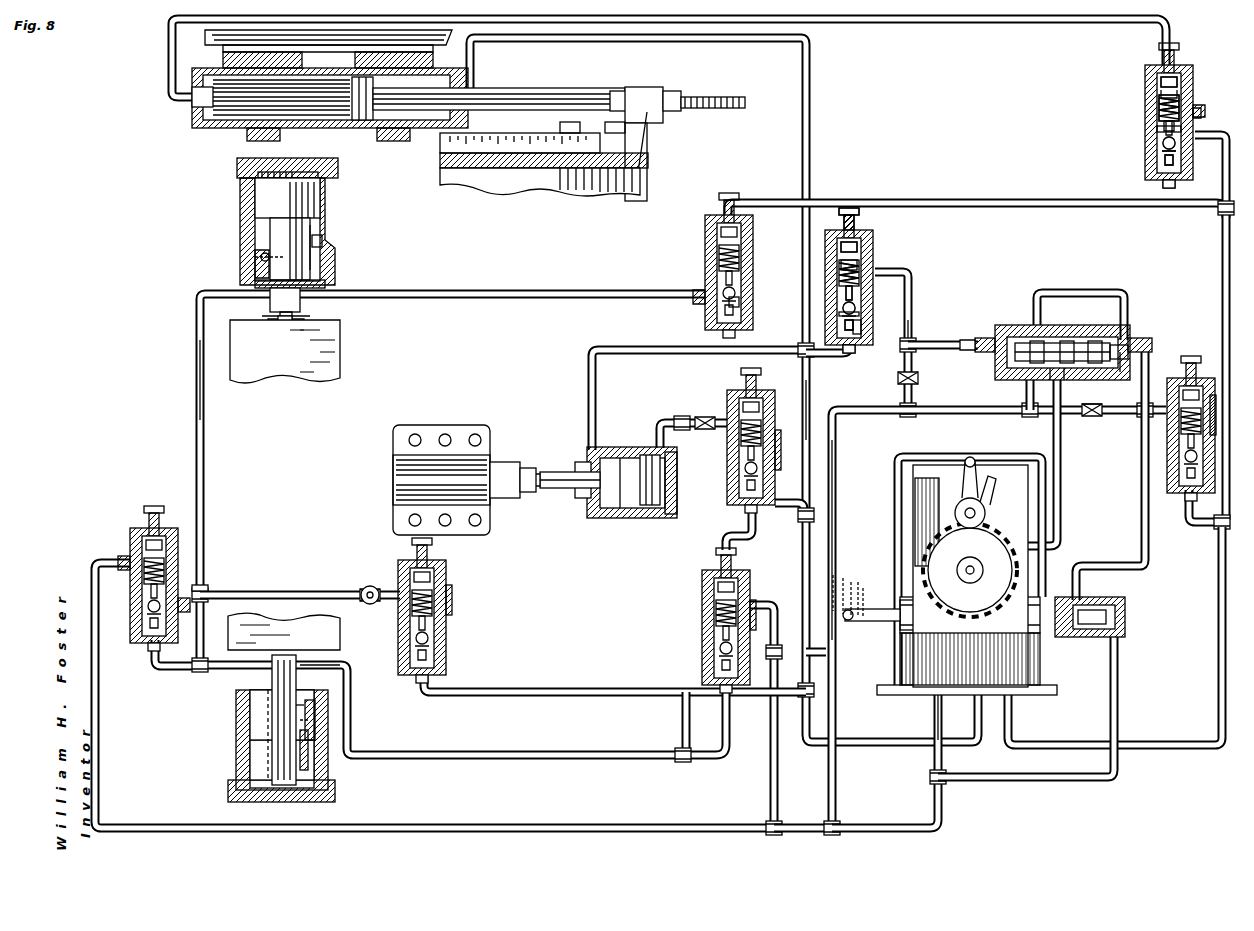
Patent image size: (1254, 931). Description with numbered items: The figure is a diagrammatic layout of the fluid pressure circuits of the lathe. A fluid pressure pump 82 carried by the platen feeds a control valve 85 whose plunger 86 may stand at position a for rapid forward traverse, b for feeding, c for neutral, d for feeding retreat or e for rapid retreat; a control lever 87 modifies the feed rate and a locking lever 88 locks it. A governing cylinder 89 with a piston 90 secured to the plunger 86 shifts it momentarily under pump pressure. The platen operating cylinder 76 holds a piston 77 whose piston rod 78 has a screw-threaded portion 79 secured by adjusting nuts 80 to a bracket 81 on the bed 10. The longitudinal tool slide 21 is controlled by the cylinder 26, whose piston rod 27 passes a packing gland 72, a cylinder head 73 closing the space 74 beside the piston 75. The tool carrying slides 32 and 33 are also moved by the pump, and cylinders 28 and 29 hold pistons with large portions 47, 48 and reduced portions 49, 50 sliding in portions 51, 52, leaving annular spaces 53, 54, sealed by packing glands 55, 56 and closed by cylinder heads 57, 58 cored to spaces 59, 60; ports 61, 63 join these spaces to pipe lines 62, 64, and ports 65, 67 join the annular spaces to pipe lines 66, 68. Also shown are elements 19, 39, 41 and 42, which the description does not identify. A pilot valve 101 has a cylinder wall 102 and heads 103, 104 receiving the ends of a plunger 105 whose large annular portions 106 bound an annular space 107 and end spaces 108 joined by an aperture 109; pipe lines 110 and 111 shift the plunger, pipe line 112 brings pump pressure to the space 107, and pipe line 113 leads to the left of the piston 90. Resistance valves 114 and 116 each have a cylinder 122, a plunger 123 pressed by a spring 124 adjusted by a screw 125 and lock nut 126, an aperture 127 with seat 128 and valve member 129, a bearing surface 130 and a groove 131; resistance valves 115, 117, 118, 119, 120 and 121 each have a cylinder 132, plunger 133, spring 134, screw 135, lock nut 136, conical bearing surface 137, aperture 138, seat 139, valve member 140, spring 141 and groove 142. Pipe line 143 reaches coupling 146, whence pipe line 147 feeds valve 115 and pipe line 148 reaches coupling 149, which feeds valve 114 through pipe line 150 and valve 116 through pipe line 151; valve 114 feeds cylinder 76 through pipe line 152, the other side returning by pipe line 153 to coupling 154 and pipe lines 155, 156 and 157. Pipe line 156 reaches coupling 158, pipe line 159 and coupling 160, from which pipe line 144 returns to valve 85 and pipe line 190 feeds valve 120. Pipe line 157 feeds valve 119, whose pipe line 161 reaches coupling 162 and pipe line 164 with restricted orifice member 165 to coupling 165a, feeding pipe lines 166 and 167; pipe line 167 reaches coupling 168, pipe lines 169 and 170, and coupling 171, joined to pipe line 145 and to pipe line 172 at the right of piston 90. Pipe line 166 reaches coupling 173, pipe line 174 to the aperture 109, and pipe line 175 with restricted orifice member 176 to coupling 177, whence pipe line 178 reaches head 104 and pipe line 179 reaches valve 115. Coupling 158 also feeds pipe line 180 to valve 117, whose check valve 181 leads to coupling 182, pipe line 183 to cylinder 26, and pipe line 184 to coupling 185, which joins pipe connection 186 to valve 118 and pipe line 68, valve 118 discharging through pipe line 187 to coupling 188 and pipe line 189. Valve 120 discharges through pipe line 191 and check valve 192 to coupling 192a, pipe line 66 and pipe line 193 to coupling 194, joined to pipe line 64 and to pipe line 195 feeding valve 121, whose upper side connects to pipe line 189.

The bed 10 is at (646, 184).
The table plate 19 is at (212, 35).
The longitudinal tool slide 21 is at (470, 462).
The longitudinal slide operating cylinder 26 is at (638, 518).
The piston rod 27 is at (523, 490).
The cylinder 28 is at (325, 226).
The cylinder 29 is at (295, 710).
The tool carrying slide 32 is at (333, 362).
The tool carrying slide 33 is at (272, 616).
The nut 39 is at (292, 320).
The cap 41 is at (270, 318).
The stem 42 is at (292, 318).
The large portion of piston 47 is at (253, 198).
The large portion of piston 48 is at (252, 752).
The reduced portion of piston 49 is at (321, 236).
The reduced portion of piston 50 is at (304, 702).
The cylinder portion 51 is at (253, 262).
The cylinder portion 52 is at (315, 680).
The annular space 53 is at (243, 228).
The annular space 54 is at (308, 732).
The packing gland 55 is at (329, 284).
The packing gland 56 is at (324, 690).
The cylinder head 57 is at (248, 160).
The cylinder head 58 is at (228, 790).
The space 59 is at (296, 172).
The space 60 is at (290, 790).
The longitudinal port 61 is at (322, 240).
The pipe line 62 is at (538, 292).
The longitudinal port 63 is at (255, 702).
The pipe line 64 is at (240, 678).
The port 65 is at (259, 254).
The pipe line 66 is at (196, 367).
The port 67 is at (308, 720).
The pipe line 68 is at (512, 755).
The packing gland 72 is at (580, 462).
The cylinder head 73 is at (668, 518).
The space 74 is at (655, 470).
The piston 75 is at (644, 458).
The platen operating cylinder 76 is at (308, 80).
The piston 77 is at (364, 118).
The piston rod 78 is at (546, 98).
The screw-threaded portion 79 is at (728, 96).
The adjusting nuts 80 is at (668, 90).
The bracket 81 is at (648, 130).
The fluid pressure pump 82 is at (920, 515).
The control valve 85 is at (1026, 658).
The plunger 86 is at (860, 623).
The control lever 87 is at (964, 458).
The locking lever 88 is at (983, 498).
The governing cylinder 89 is at (1092, 598).
The piston 90 is at (1086, 637).
The pilot valve 101 is at (1036, 340).
The cylinder wall 102 is at (1090, 332).
The cylinder head 103 is at (996, 370).
The cylinder head 104 is at (1155, 348).
The plunger 105 is at (1048, 328).
The large annular portions 106 is at (1068, 376).
The annular space 107 is at (1080, 326).
The spaces 108 is at (1067, 341).
The aperture 109 is at (1000, 380).
The pipe line 110 is at (958, 342).
The pipe line 111 is at (1134, 346).
The pipe line 112 is at (1060, 482).
The pipe line 113 is at (1042, 294).
The resistance valve 114 is at (1180, 98).
The resistance valve 115 is at (1232, 414).
The resistance valve 116 is at (738, 292).
The resistance valve 117 is at (791, 450).
The resistance valve 118 is at (767, 589).
The resistance valve 119 is at (861, 254).
The resistance valve 120 is at (466, 591).
The resistance valve 121 is at (130, 548).
The cylinder 122 is at (1182, 110).
The plunger 123 is at (1158, 116).
The spring 124 is at (1156, 130).
The screw 125 is at (1156, 164).
The lock nut 126 is at (1162, 182).
The longitudinal aperture 127 is at (1198, 118).
The valve seat 128 is at (1178, 86).
The valve member 129 is at (1160, 100).
The bearing surface 130 is at (1188, 70).
The longitudinal groove 131 is at (1182, 118).
The cylinder 132 is at (733, 450).
The plunger 133 is at (733, 455).
The spring 134 is at (863, 248).
The screw 135 is at (856, 226).
The lock nut 136 is at (840, 218).
The conical bearing surface 137 is at (682, 500).
The aperture 138 is at (682, 450).
The seat 139 is at (717, 477).
The valve member 140 is at (826, 328).
The spring 141 is at (632, 507).
The longitudinal groove 142 is at (826, 305).
The pipe line 143 is at (1046, 741).
The pipe line 144 is at (890, 728).
The pipe line 145 is at (938, 700).
The coupling 146 is at (1218, 530).
The pipe line 147 is at (1186, 512).
The pipe line 148 is at (1225, 270).
The coupling 149 is at (1220, 202).
The pipe line 150 is at (1224, 180).
The pipe line 151 is at (980, 200).
The pipe line 152 is at (860, 30).
The pipe line 153 is at (808, 150).
The coupling 154 is at (792, 358).
The pipe line 155 is at (647, 348).
The pipe line 156 is at (808, 404).
The pipe line 157 is at (844, 359).
The coupling 158 is at (800, 520).
The pipe line 159 is at (835, 648).
The coupling 160 is at (792, 742).
The pipe line 161 is at (912, 300).
The coupling 162 is at (912, 326).
The pipe line 164 is at (898, 352).
The restricted orifice member 165 is at (898, 380).
The coupling 165a is at (906, 416).
The pipe line 166 is at (977, 417).
The pipe line 167 is at (834, 480).
The coupling 168 is at (836, 834).
The pipe line 169 is at (805, 832).
The pipe line 170 is at (885, 833).
The coupling 171 is at (945, 784).
The pipe line 172 is at (1062, 783).
The coupling 173 is at (1033, 419).
The pipe line 174 is at (1024, 393).
The pipe line 175 is at (1095, 458).
The restricted orifice member 176 is at (1085, 426).
The coupling 177 is at (1142, 425).
The pipe line 178 is at (1149, 362).
The pipe line 179 is at (1115, 505).
The pipe line 180 is at (782, 515).
The check valve 181 is at (706, 418).
The coupling 182 is at (680, 416).
The pipe line 183 is at (660, 423).
The pipe line 184 is at (740, 530).
The coupling 185 is at (682, 763).
The pipe connection 186 is at (729, 707).
The pipe line 187 is at (776, 774).
The coupling 188 is at (772, 834).
The pipe line 189 is at (657, 825).
The pipe line 190 is at (647, 688).
The pipe line 191 is at (321, 593).
The check valve 192 is at (370, 586).
The coupling 192a is at (196, 581).
The pipe line 193 is at (212, 599).
The coupling 194 is at (207, 671).
The pipe line 195 is at (170, 663).
The rapid traverse forward position a is at (824, 585).
The feeding position b is at (842, 583).
The neutral position c is at (854, 588).
The feeding retreat position d is at (865, 589).
The rapid traverse retreat position e is at (869, 595).